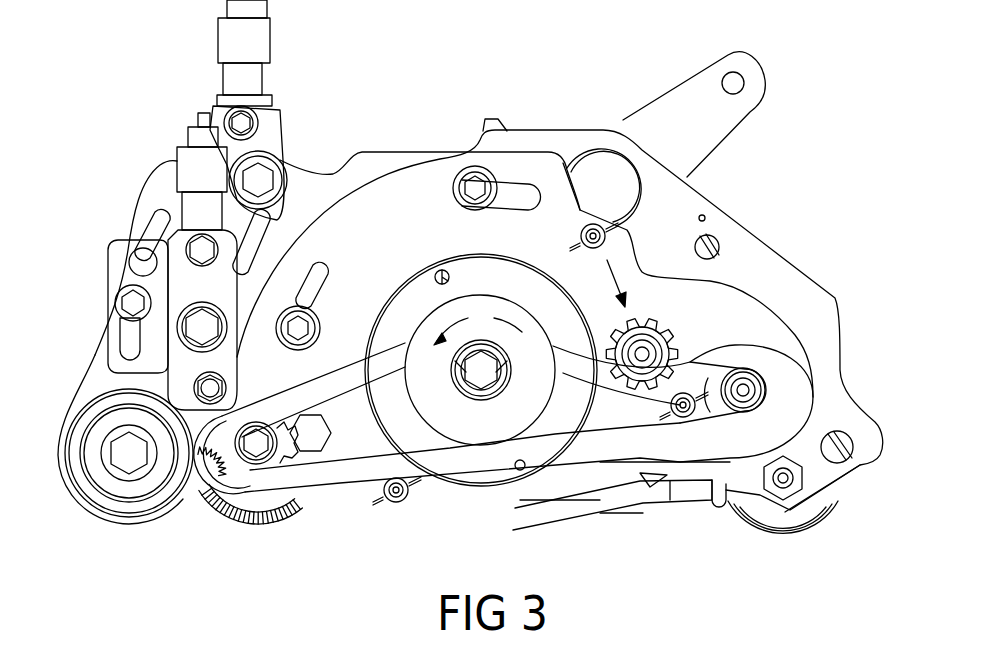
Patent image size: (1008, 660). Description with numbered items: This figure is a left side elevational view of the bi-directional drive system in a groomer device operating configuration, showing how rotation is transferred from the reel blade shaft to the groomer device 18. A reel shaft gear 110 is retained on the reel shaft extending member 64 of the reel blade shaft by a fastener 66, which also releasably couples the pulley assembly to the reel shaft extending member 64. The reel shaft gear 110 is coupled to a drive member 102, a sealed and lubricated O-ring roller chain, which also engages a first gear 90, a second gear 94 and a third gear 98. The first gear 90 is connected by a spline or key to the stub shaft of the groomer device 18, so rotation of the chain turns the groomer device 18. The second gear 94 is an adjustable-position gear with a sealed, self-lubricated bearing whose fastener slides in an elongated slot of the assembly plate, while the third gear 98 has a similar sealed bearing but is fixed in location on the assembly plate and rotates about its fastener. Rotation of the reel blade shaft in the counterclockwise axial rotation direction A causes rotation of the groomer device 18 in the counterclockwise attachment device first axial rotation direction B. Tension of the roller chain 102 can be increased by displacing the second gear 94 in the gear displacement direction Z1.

The groomer device 18 is at (249, 520).
The reel shaft extending member 64 is at (458, 390).
The fastener 66 is at (500, 368).
The first gear 90 is at (256, 450).
The second gear 94 is at (642, 322).
The third gear 98 is at (716, 372).
The drive member 102 is at (590, 443).
The reel shaft gear 110 is at (475, 380).
The counterclockwise axial rotation direction A is at (485, 362).
The attachment device first axial rotation direction B is at (207, 505).
The gear displacement direction Z1 is at (603, 283).